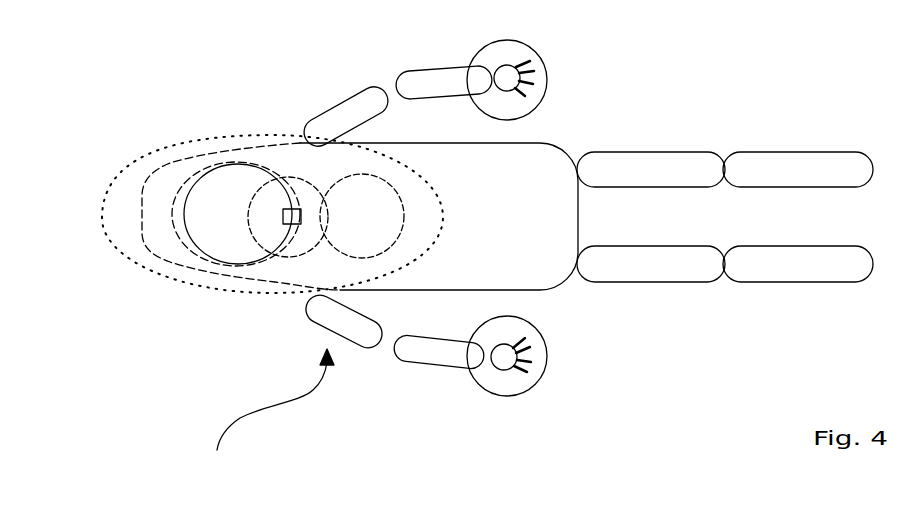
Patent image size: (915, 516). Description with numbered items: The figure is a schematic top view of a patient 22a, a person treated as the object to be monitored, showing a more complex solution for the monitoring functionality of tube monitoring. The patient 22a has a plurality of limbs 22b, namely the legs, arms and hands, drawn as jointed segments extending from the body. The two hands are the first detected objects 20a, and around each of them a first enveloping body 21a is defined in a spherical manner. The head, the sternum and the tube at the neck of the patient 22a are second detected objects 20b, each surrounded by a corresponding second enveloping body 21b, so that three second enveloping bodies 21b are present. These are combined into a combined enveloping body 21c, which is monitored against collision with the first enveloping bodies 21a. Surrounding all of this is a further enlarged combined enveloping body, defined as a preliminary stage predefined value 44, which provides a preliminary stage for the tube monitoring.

The preliminary stage predefined value 44 is at (106, 222).
The combined enveloping body 21c is at (142, 233).
The second enveloping bodies 21b is at (184, 251).
The second detected objects 20b is at (223, 210).
The limbs 22b is at (427, 78).
The first enveloping bodies 21a is at (548, 84).
The first detected objects 20a is at (530, 72).
The patient 22a is at (263, 416).